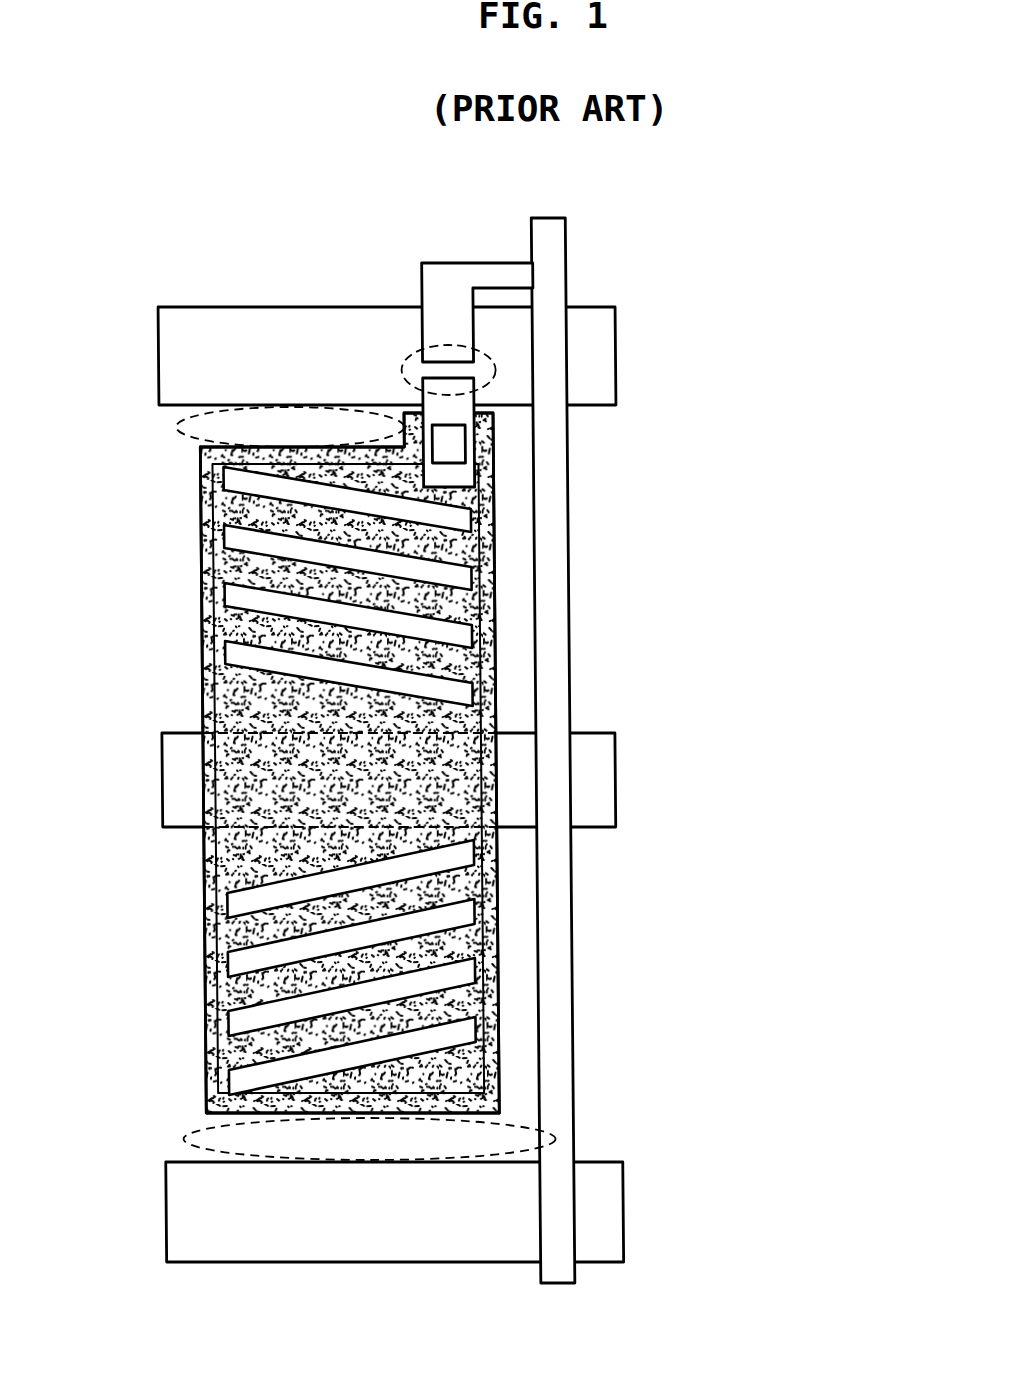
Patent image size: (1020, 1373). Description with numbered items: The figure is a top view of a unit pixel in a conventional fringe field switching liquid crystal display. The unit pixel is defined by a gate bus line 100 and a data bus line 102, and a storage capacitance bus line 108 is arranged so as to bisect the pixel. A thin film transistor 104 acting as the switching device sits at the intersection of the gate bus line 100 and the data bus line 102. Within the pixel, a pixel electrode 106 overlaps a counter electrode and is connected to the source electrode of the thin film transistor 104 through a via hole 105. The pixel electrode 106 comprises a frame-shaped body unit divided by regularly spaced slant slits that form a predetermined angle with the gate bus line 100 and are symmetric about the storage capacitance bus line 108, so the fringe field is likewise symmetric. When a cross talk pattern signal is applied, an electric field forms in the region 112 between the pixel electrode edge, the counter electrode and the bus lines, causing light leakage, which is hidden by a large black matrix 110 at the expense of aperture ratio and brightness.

The gate bus line 100 is at (602, 356).
The data bus line 102 is at (555, 551).
The thin film transistor 104 is at (491, 358).
The via hole 105 is at (452, 444).
The pixel electrode 106 is at (200, 535).
The storage capacitance bus line 108 is at (177, 782).
The black matrix 110 is at (207, 866).
The region 112 is at (176, 427).